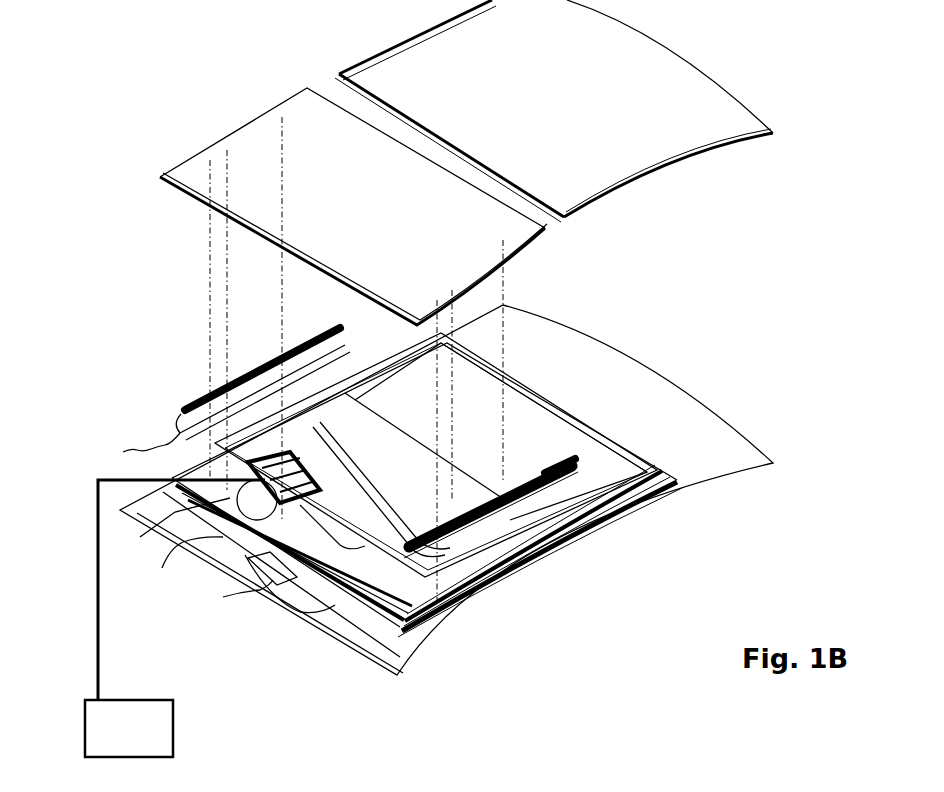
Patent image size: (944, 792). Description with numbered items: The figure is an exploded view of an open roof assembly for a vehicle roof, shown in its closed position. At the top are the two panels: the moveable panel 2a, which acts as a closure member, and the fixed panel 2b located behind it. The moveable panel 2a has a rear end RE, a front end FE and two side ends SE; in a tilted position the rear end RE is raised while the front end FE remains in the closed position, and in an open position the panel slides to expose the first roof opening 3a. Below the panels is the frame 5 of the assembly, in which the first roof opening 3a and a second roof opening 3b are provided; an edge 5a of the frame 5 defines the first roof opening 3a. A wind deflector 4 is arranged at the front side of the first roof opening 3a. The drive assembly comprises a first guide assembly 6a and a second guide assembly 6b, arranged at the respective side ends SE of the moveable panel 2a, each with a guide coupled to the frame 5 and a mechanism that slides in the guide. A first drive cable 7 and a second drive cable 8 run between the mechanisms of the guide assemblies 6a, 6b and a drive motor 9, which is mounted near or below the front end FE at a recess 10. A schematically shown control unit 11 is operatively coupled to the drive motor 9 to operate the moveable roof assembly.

The moveable panel 2a is at (353, 206).
The fixed panel 2b is at (554, 111).
The first roof opening 3a is at (436, 455).
The second roof opening 3b is at (501, 431).
The wind deflector 4 is at (152, 517).
The frame 5 is at (493, 607).
The edge 5a is at (487, 535).
The first guide assembly 6a is at (510, 513).
The second guide assembly 6b is at (185, 373).
The first drive cable 7 is at (287, 617).
The second drive cable 8 is at (140, 453).
The drive motor 9 is at (185, 547).
The recess 10 is at (237, 590).
The control unit 11 is at (175, 618).
The rear end RE is at (362, 120).
The side end SE is at (240, 130).
The front end FE is at (257, 249).